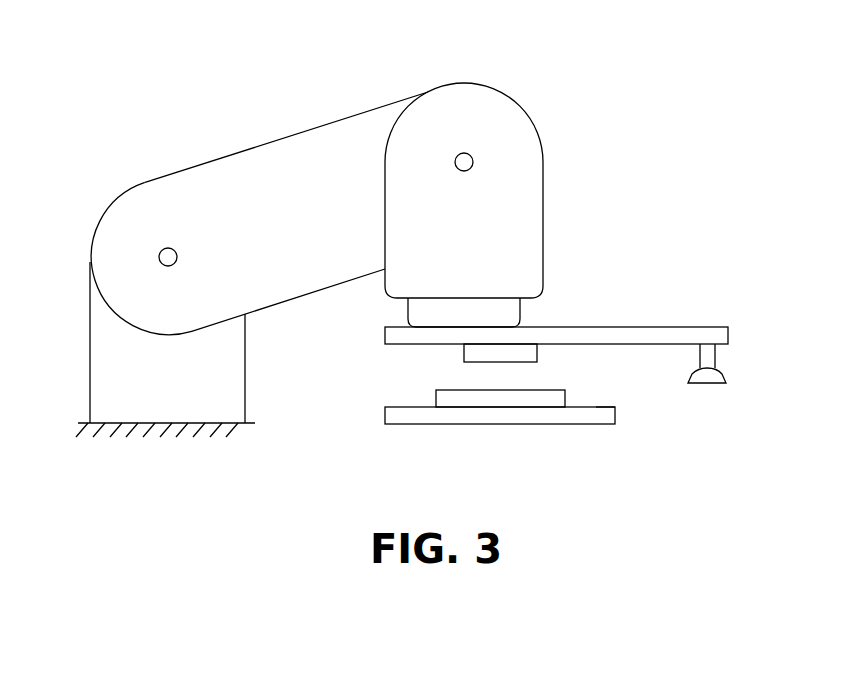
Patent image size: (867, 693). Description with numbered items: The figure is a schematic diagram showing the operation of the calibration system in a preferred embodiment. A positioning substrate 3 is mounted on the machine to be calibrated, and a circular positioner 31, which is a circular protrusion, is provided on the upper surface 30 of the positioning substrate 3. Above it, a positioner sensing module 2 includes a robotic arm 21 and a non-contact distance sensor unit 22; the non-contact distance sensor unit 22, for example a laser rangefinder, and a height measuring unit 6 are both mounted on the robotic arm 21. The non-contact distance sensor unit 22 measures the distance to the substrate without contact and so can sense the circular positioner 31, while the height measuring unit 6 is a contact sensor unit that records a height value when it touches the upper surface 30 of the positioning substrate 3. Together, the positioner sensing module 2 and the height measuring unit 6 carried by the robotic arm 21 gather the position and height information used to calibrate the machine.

The robotic arm 21 is at (468, 98).
The positioner sensing module 2 is at (710, 333).
The non-contact distance sensor unit 22 is at (493, 364).
The circular positioner 31 is at (448, 390).
The upper surface 30 is at (597, 407).
The positioning substrate 3 is at (545, 413).
The height measuring unit 6 is at (710, 357).